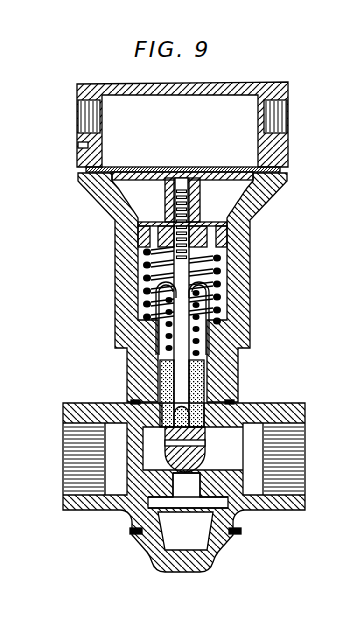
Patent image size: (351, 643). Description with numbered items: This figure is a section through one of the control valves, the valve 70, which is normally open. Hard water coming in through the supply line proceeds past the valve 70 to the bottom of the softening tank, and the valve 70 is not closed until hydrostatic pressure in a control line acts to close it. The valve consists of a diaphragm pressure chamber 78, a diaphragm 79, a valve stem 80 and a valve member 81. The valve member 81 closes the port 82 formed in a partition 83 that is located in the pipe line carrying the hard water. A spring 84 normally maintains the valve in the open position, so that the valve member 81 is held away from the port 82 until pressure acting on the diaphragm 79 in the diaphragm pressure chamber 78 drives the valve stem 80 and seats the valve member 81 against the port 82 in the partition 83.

The valve 70 is at (251, 295).
The diaphragm pressure chamber 78 is at (115, 141).
The diaphragm 79 is at (93, 169).
The valve stem 80 is at (178, 262).
The valve member 81 is at (204, 455).
The port 82 is at (185, 490).
The partition 83 is at (137, 480).
The spring 84 is at (146, 278).